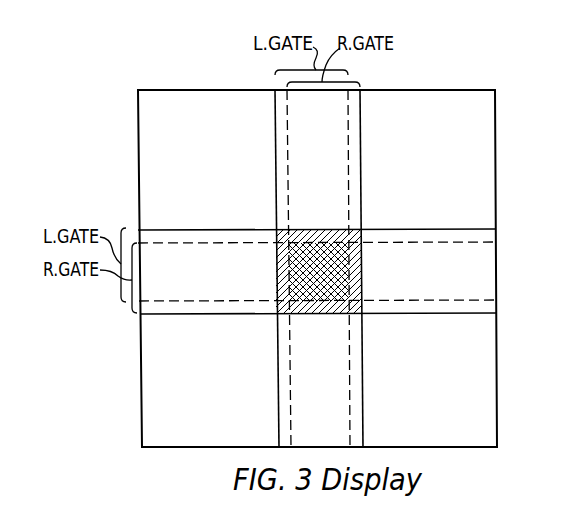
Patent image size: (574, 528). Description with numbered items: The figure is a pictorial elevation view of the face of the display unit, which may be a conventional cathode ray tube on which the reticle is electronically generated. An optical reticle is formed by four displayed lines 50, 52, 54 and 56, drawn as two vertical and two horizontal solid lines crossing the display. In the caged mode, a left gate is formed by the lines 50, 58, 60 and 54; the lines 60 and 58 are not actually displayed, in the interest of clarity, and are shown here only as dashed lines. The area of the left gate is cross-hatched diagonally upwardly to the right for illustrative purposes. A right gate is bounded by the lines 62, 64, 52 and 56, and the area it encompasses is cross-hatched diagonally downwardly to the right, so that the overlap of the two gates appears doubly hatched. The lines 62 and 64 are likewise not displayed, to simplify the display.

The reticle line 50 is at (275, 150).
The reticle line 52 is at (361, 170).
The reticle line 54 is at (448, 229).
The reticle line 56 is at (396, 314).
The left gate boundary line 58 is at (348, 191).
The left gate boundary line 60 is at (475, 300).
The right gate boundary line 62 is at (291, 378).
The right gate boundary line 64 is at (378, 244).